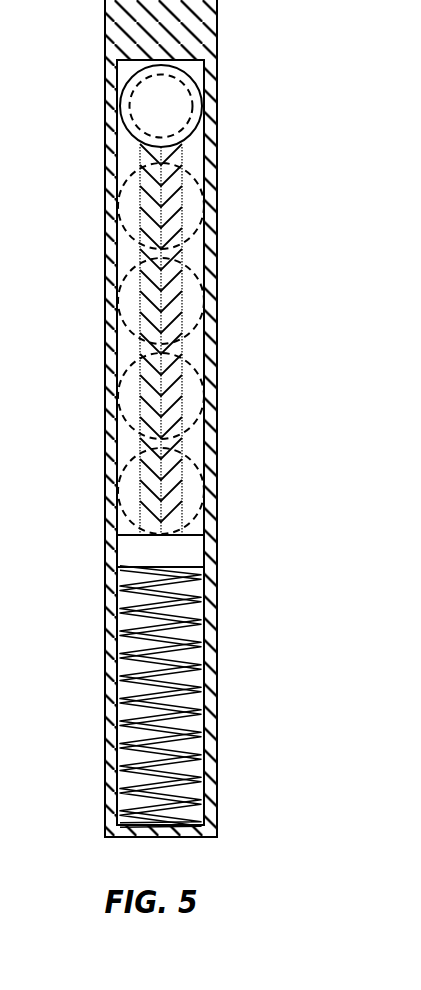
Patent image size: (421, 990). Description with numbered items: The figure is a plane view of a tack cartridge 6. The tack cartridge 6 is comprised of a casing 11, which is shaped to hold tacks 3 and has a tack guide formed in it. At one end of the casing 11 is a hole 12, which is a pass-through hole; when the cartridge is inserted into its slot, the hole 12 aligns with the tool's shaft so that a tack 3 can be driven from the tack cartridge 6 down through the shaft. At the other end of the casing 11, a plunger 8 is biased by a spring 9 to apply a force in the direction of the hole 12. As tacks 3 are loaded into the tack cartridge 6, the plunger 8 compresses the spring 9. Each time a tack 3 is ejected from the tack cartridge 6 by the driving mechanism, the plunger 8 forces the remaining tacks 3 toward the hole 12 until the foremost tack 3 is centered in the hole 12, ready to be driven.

The tack 3 is at (137, 92).
The tack cartridge 6 is at (296, 60).
The plunger 8 is at (193, 550).
The spring 9 is at (203, 687).
The casing 11 is at (220, 200).
The hole 12 is at (192, 82).